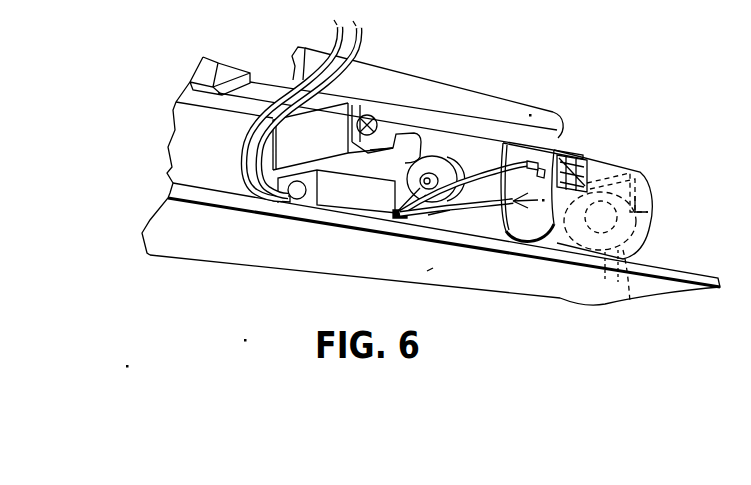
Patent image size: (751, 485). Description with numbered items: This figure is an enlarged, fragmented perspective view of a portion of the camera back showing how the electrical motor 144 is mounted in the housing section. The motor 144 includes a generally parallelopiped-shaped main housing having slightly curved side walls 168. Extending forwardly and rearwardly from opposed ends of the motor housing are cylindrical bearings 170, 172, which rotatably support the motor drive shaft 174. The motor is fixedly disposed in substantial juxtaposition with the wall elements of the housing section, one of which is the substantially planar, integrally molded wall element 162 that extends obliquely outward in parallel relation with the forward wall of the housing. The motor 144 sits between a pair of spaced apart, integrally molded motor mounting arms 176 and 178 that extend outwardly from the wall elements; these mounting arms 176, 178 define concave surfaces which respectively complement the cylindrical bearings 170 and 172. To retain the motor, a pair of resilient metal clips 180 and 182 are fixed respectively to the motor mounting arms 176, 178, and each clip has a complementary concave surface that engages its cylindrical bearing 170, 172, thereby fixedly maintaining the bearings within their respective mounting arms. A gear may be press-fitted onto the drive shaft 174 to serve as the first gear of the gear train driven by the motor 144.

The electrical motor 144 is at (563, 240).
The wall element 162 is at (271, 250).
The side walls 168 is at (590, 173).
The cylindrical bearing 170 is at (447, 205).
The cylindrical bearing 172 is at (640, 247).
The motor drive shaft 174 is at (623, 222).
The motor mounting arm 176 is at (432, 205).
The motor mounting arm 178 is at (630, 302).
The resilient metal clip 180 is at (447, 160).
The resilient metal clip 182 is at (650, 185).